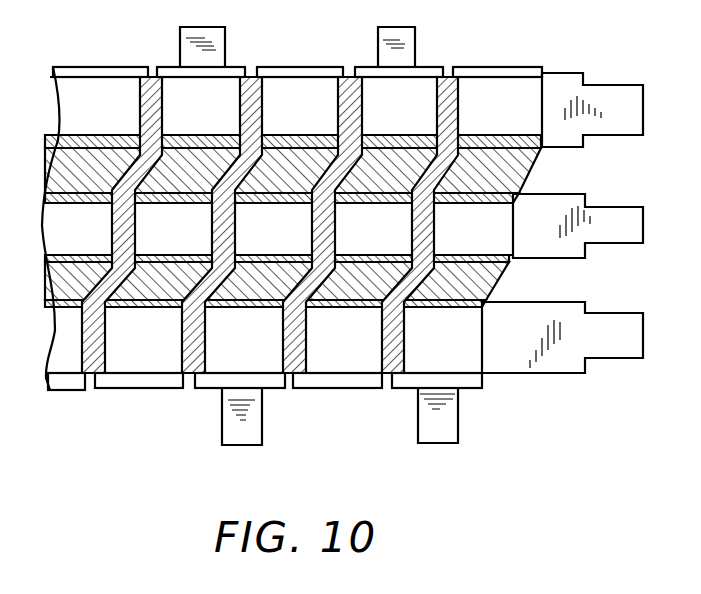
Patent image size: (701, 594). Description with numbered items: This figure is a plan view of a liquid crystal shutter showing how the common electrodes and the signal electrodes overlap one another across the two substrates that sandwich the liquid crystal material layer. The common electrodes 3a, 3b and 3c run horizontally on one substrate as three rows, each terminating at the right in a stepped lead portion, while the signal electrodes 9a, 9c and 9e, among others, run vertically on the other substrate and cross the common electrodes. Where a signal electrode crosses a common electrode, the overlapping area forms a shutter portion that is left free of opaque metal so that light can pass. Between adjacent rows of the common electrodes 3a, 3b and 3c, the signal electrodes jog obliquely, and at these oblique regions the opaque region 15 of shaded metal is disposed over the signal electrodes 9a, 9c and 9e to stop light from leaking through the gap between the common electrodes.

The signal electrode 9a is at (502, 67).
The signal electrode 9c is at (311, 67).
The signal electrode 9e is at (119, 67).
The opaque region 15 is at (518, 172).
The common electrode 3a is at (623, 118).
The common electrode 3b is at (614, 227).
The common electrode 3c is at (625, 345).